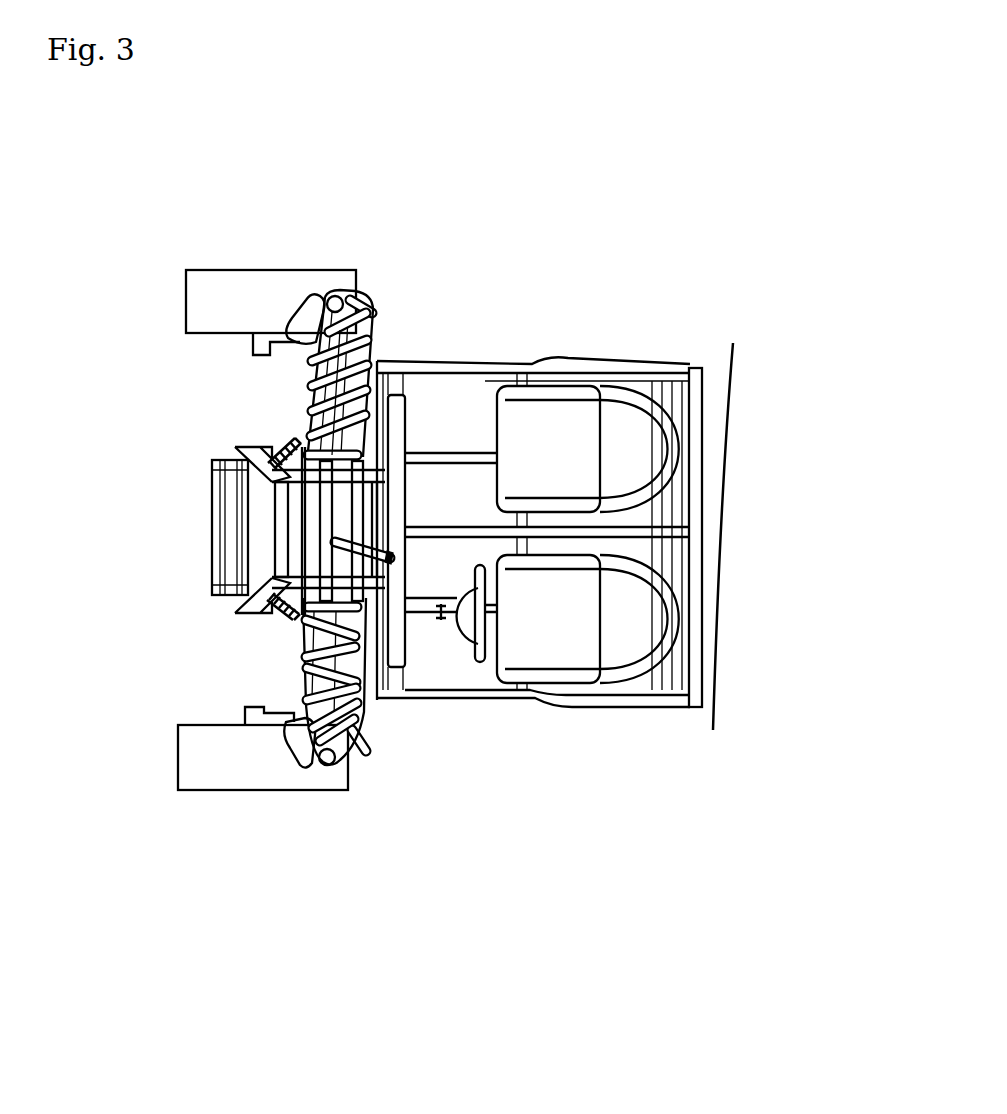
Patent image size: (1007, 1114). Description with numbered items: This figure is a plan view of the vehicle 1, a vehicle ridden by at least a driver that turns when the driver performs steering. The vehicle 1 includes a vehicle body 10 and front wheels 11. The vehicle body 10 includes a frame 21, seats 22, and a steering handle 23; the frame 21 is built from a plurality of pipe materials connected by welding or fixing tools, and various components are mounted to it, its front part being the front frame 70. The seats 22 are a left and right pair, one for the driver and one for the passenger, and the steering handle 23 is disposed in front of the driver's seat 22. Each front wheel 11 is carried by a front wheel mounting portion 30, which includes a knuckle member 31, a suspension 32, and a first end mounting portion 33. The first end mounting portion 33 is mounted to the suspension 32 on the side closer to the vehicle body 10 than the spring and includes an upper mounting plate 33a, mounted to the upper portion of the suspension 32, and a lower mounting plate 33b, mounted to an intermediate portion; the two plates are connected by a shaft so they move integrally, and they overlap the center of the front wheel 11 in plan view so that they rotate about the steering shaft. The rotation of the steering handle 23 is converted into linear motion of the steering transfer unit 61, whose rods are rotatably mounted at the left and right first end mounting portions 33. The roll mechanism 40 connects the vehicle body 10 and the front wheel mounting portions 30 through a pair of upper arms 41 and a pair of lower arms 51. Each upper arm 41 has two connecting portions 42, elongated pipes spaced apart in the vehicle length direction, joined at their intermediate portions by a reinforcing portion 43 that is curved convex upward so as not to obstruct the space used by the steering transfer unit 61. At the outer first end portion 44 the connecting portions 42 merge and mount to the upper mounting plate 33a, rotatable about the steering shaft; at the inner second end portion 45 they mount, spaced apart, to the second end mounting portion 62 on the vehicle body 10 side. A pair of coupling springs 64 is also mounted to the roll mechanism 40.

The vehicle 1 is at (815, 212).
The vehicle body 10 is at (430, 282).
The front wheel 11 is at (188, 755).
The frame 21 is at (470, 350).
The seat 22 is at (574, 684).
The steering handle 23 is at (480, 665).
The front wheel mounting portion 30 is at (292, 308).
The knuckle member 31 is at (262, 722).
The suspension 32 is at (290, 720).
The first end mounting portion 33 is at (422, 903).
The upper mounting plate 33a is at (357, 763).
The lower mounting plate 33b is at (287, 768).
The roll mechanism 40 is at (245, 655).
The upper arm 41 is at (216, 373).
The connecting portion 42 is at (305, 425).
The reinforcing portion 43 is at (318, 386).
The first end portion 44 is at (300, 462).
The second end portion 45 is at (345, 297).
The lower arm 51 is at (290, 660).
The steering transfer unit 61 is at (335, 512).
The second end mounting portion 62 is at (366, 477).
The coupling spring 64 is at (290, 608).
The front frame 70 is at (207, 527).